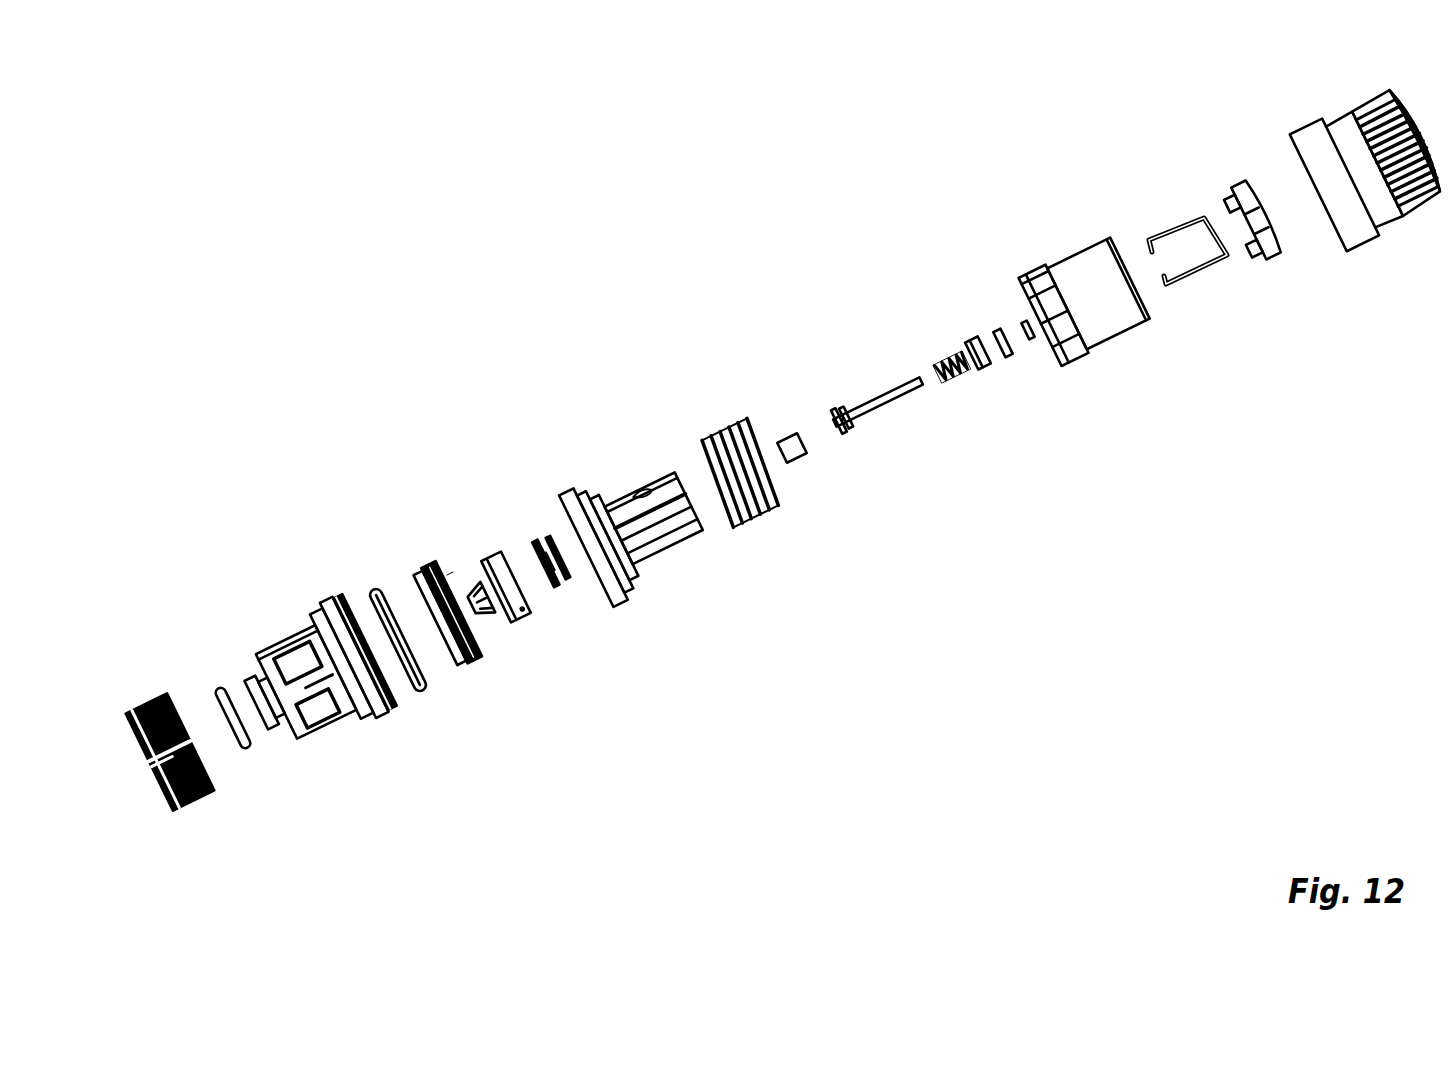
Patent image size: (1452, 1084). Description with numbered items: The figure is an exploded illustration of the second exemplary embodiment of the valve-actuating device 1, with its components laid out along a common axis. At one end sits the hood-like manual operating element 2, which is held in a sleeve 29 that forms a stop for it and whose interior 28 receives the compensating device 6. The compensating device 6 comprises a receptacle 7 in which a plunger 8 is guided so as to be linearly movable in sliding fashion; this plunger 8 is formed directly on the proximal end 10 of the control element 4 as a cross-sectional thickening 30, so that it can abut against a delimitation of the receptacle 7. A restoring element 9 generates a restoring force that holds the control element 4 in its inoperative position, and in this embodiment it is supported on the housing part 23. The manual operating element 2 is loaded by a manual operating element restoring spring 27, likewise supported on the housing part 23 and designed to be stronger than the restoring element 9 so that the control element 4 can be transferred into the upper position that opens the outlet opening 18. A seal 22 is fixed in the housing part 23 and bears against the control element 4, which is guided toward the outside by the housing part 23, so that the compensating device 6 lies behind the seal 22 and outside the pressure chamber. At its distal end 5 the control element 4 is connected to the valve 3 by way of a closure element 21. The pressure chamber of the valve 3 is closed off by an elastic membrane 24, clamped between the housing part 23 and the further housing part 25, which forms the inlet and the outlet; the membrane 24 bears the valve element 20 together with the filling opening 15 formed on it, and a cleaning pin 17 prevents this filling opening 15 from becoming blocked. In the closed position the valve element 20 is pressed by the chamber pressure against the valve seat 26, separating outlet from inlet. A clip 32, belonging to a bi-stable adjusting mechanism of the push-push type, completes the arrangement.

The valve-actuating device 1 is at (498, 222).
The manual operating element 2 is at (1104, 338).
The valve 3 is at (850, 555).
The control element 4 is at (880, 400).
The distal end 5 is at (825, 382).
The compensating device 6 is at (1061, 396).
The receptacle 7 is at (692, 476).
The plunger 8 is at (928, 398).
The restoring element 9 is at (944, 356).
The proximal end 10 is at (905, 350).
The filling opening 15 is at (494, 614).
The cleaning pin 17 is at (556, 587).
The outlet opening 18 is at (520, 574).
The valve element 20 is at (465, 548).
The closure element 21 is at (792, 436).
The seal 22 is at (1000, 332).
The housing part 23 is at (636, 500).
The membrane 24 is at (393, 552).
The further housing part 25 is at (292, 700).
The valve seat 26 is at (376, 662).
The manual operating element restoring spring 27 is at (742, 425).
The interior 28 is at (1046, 352).
The sleeve 29 is at (1353, 232).
The cross-sectional thickening 30 is at (1028, 322).
The clip 32 is at (1200, 280).